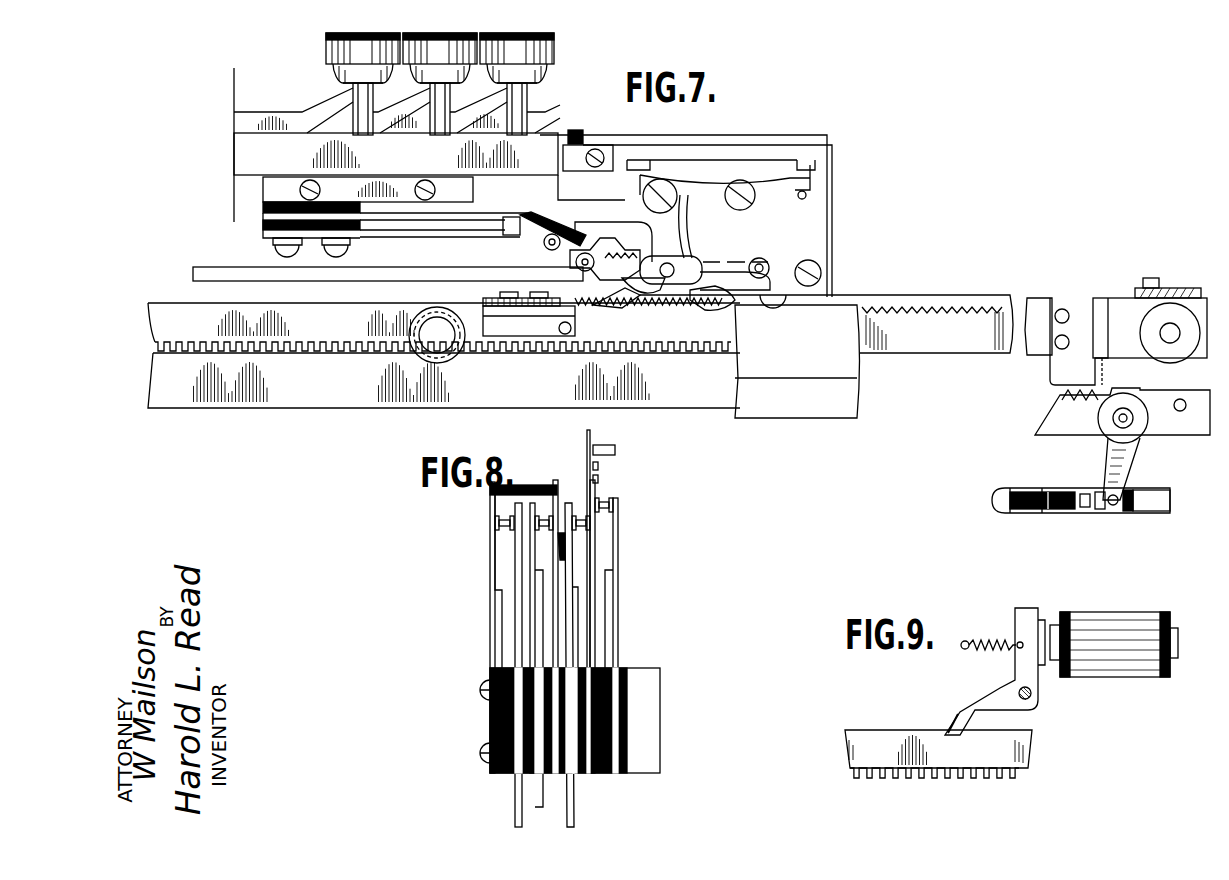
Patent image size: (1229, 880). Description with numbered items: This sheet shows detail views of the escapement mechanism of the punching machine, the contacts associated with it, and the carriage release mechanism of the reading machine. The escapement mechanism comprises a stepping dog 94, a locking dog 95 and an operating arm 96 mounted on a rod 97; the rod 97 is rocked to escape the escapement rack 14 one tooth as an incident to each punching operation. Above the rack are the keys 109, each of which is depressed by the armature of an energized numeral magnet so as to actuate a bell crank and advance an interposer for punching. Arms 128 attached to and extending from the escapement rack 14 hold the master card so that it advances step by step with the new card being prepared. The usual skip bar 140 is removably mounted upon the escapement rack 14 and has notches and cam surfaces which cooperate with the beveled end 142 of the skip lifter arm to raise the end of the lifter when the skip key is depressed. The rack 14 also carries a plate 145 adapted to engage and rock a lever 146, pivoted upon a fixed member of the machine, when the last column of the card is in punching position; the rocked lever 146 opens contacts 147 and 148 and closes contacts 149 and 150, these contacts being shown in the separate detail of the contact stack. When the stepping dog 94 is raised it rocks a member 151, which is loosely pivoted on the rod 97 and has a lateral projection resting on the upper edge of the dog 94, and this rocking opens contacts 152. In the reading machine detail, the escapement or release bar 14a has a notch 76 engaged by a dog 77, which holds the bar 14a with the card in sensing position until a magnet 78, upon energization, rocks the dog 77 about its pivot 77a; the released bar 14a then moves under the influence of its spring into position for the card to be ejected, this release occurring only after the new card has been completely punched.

In FIG. 7, the key 109 is at (554, 52).
In FIG. 7, the member 151 is at (598, 206).
In FIG. 7, the contacts 152 is at (498, 226).
In FIG. 7, the operating arm 96 is at (692, 257).
In FIG. 7, the stepping dog 94 is at (603, 298).
In FIG. 7, the rod 97 is at (665, 282).
In FIG. 7, the locking dog 95 is at (710, 296).
In FIG. 7, the beveled end 142 is at (632, 318).
In FIG. 7, the escapement rack 14 is at (673, 330).
In FIG. 7, the arms 128 is at (472, 306).
In FIG. 7, the skip bar 140 is at (815, 300).
In FIG. 7, the plate 145 is at (1055, 370).
In FIG. 7, the lever 146 is at (1128, 460).
In FIG. 8, the lever 146 is at (615, 450).
In FIG. 7, the contacts 147 is at (1115, 506).
In FIG. 8, the contacts 147 is at (612, 515).
In FIG. 7, the contacts 148 is at (1018, 508).
In FIG. 8, the contacts 148 is at (497, 536).
In FIG. 7, the contacts 149 is at (1062, 510).
In FIG. 8, the contacts 149 is at (545, 535).
In FIG. 7, the contacts 150 is at (1093, 510).
In FIG. 8, the contacts 150 is at (590, 536).
In FIG. 9, the escapement or release bar 14a is at (882, 735).
In FIG. 9, the dog 77 is at (965, 698).
In FIG. 9, the pivot 77a is at (1040, 695).
In FIG. 9, the notch 76 is at (946, 736).
In FIG. 9, the magnet 78 is at (1120, 618).